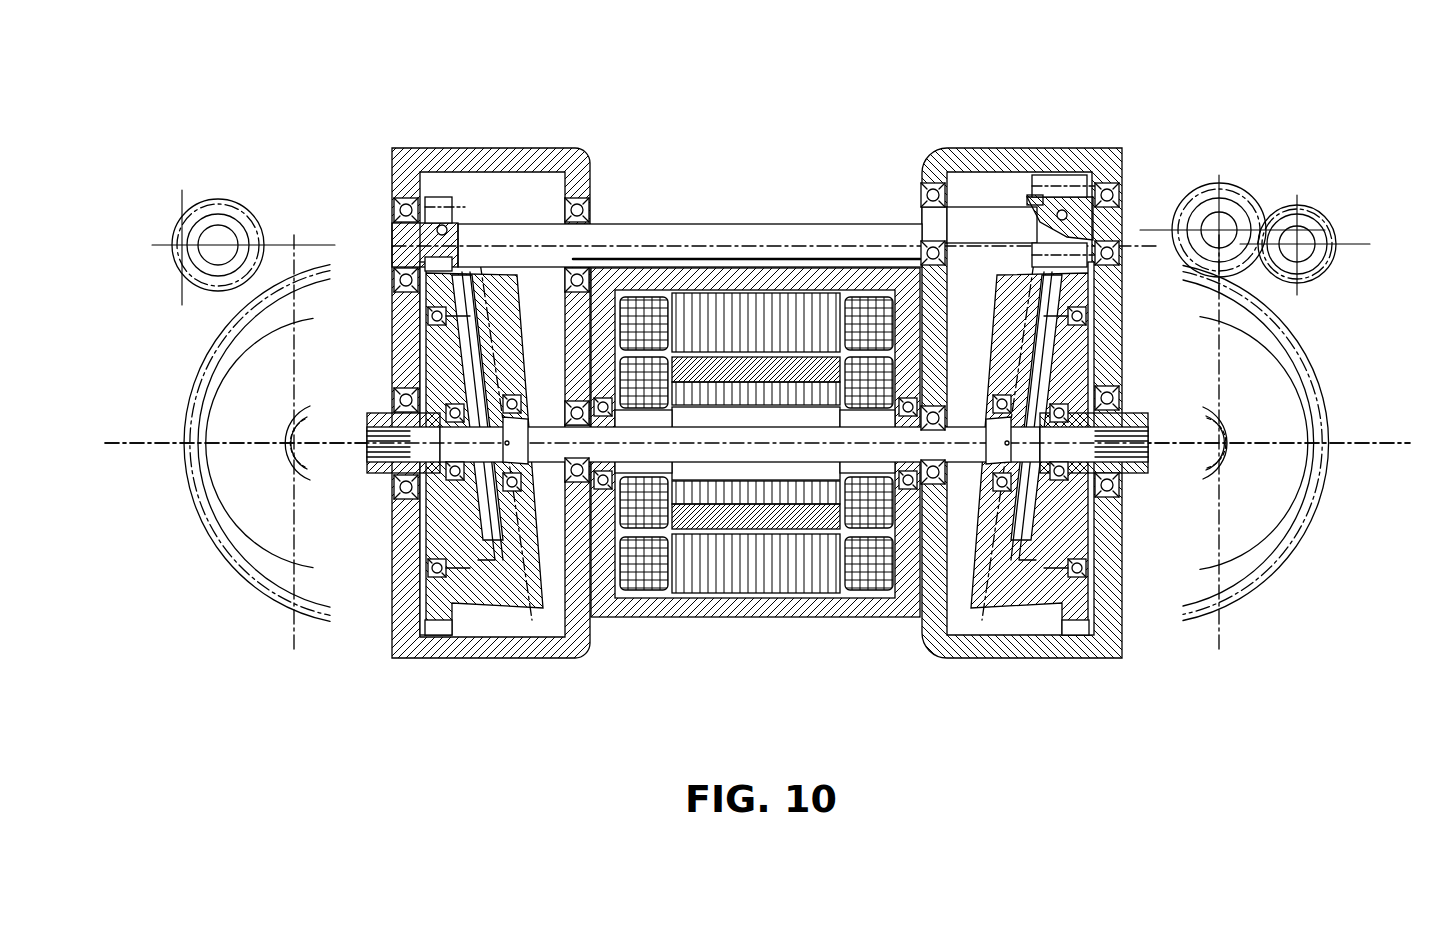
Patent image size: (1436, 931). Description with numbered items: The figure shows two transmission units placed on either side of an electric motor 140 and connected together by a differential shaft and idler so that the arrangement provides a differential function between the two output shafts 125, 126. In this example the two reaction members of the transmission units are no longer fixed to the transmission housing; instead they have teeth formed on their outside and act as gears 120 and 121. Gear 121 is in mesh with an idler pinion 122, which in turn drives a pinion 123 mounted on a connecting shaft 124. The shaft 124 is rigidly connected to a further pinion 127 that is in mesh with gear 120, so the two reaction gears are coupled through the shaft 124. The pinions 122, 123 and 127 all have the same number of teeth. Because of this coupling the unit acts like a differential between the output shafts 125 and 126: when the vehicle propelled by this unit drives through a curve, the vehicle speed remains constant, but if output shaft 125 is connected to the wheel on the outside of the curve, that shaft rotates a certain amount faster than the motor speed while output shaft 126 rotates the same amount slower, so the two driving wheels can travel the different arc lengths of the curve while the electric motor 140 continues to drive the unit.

The gear 120 is at (220, 572).
The gear 121 is at (1080, 607).
The idler pinion 122 is at (1058, 188).
The pinion 123 is at (1028, 198).
The shaft 124 is at (680, 240).
The output shaft 125 is at (380, 478).
The output shaft 126 is at (1135, 478).
The pinion 127 is at (437, 198).
The electric motor 140 is at (752, 585).